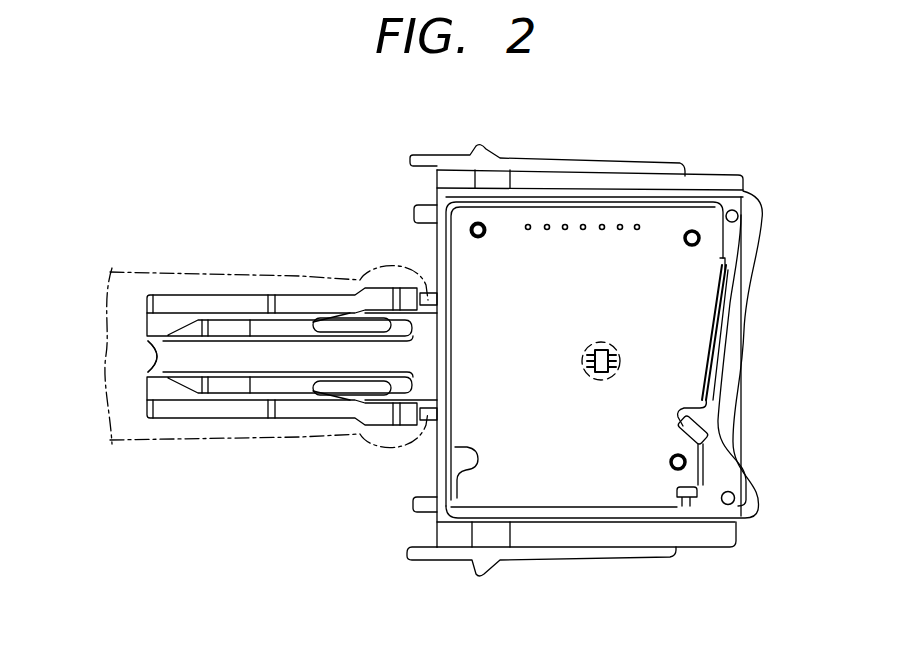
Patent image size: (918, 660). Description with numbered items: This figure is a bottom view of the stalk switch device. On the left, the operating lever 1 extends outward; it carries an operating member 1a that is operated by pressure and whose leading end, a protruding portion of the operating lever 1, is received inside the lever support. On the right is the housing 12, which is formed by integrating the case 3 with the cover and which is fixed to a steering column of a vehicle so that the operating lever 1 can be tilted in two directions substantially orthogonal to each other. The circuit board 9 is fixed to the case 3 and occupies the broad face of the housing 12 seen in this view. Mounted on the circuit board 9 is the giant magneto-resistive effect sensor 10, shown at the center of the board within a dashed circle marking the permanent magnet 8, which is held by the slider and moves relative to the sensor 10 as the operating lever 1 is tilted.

The operating lever 1 is at (228, 274).
The operating member 1a is at (292, 420).
The case 3 is at (609, 381).
The permanent magnet 8 is at (622, 348).
The circuit board 9 is at (617, 498).
The giant magneto-resistive effect (GMR) sensor 10 is at (616, 366).
The housing 12 is at (742, 172).